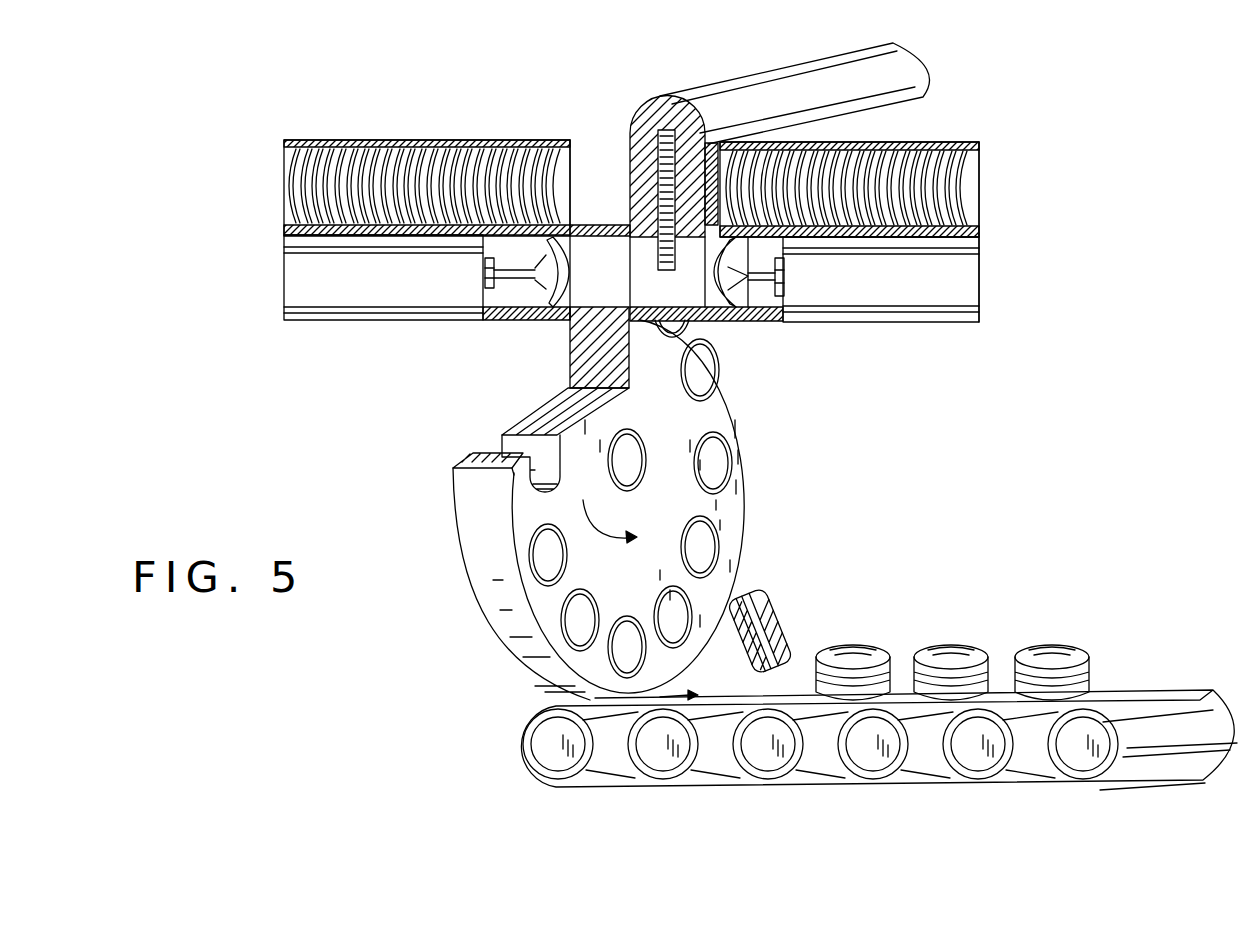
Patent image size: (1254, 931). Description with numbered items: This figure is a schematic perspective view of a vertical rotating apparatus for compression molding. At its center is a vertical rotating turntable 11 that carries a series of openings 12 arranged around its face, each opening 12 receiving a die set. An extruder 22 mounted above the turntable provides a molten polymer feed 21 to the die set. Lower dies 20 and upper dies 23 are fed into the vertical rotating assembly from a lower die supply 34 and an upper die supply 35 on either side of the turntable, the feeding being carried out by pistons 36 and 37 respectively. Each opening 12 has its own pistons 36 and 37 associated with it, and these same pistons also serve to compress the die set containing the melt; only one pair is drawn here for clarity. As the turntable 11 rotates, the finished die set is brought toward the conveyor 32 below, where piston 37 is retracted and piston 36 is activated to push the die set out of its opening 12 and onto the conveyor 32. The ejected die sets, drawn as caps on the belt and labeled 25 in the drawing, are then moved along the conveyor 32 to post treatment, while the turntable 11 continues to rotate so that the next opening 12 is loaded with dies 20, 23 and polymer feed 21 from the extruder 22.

The vertical rotating turntable 11 is at (722, 531).
The opening 12 is at (713, 465).
The lower die 20 is at (553, 168).
The molten polymer feed 21 is at (658, 257).
The extruder 22 is at (798, 87).
The upper die 23 is at (955, 201).
The cap 25 is at (1097, 661).
The conveyor 32 is at (516, 742).
The lower die supply 34 is at (351, 140).
The upper die supply 35 is at (953, 143).
The piston 36 is at (305, 265).
The piston 37 is at (957, 258).